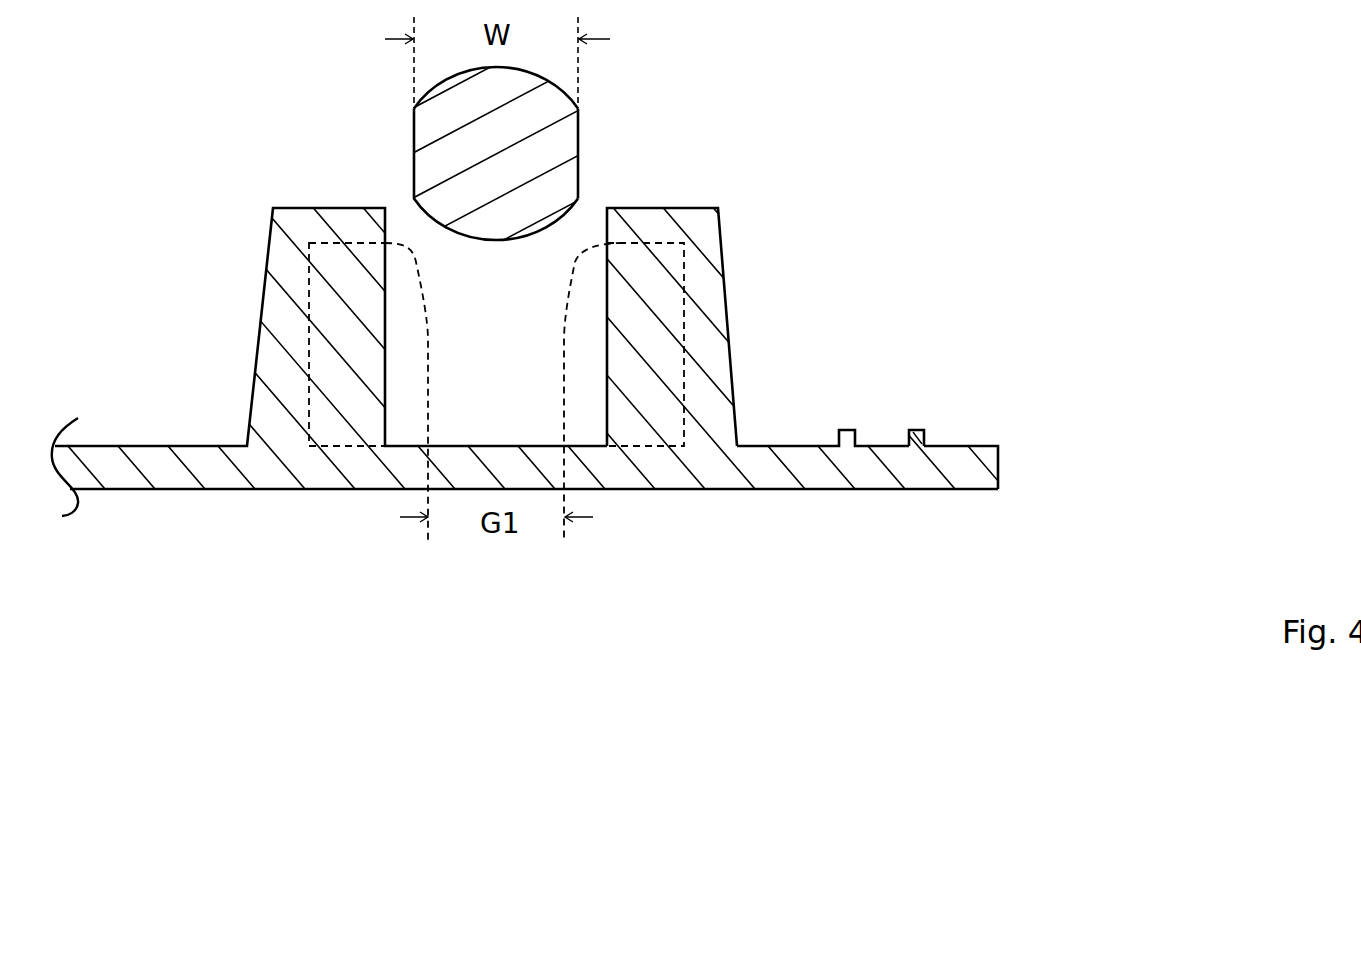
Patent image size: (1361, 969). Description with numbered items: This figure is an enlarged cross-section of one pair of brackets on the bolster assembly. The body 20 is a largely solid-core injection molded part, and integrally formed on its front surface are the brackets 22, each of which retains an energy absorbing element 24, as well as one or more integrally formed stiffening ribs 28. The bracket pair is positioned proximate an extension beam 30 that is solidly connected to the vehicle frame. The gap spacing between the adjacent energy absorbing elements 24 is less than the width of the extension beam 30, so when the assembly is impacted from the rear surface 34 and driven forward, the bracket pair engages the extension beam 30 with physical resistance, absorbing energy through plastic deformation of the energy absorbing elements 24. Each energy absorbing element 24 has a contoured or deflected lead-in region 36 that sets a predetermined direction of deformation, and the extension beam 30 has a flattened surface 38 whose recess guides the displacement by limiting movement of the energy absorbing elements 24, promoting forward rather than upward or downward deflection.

The body 20 is at (743, 475).
The bracket 22 is at (702, 342).
The energy absorbing element 24 is at (583, 353).
The stiffening rib 28 is at (920, 430).
The extension beam 30 is at (463, 151).
The rear surface 34 is at (197, 490).
The lead-in region 36 is at (415, 258).
The flattened surface 38 is at (578, 127).